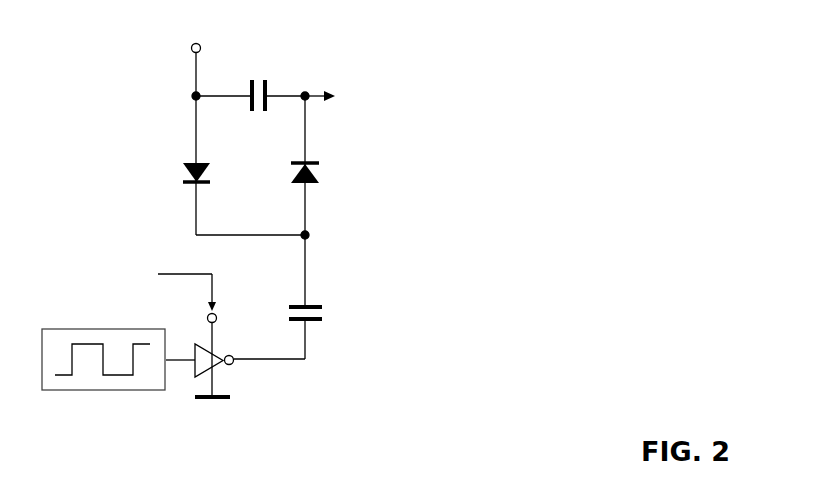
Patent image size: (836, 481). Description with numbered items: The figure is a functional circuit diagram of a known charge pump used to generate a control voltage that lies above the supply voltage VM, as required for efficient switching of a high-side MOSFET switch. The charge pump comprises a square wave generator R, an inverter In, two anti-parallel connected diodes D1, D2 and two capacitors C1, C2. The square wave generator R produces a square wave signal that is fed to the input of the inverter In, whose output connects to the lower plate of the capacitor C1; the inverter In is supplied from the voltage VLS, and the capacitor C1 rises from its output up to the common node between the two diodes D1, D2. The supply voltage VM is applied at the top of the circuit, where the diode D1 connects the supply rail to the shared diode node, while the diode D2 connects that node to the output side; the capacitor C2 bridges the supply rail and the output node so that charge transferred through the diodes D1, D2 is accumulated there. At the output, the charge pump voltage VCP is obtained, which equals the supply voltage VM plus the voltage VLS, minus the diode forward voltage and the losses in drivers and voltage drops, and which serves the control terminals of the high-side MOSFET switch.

The supply voltage VM is at (197, 52).
The capacitor C2 is at (250, 110).
The charge pump voltage VCP is at (342, 101).
The diode D1 is at (172, 165).
The diode D2 is at (324, 165).
The capacitor C1 is at (301, 297).
The level shifter supply voltage VLS is at (157, 293).
The inverter In is at (203, 360).
The square wave generator R is at (103, 359).